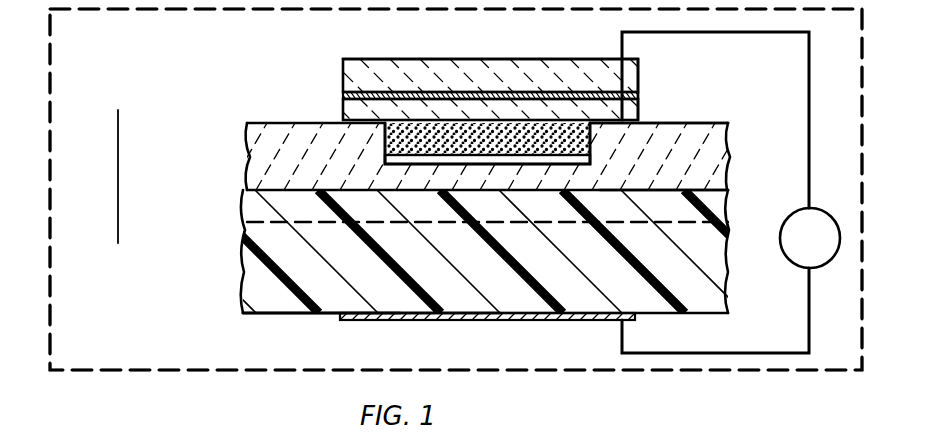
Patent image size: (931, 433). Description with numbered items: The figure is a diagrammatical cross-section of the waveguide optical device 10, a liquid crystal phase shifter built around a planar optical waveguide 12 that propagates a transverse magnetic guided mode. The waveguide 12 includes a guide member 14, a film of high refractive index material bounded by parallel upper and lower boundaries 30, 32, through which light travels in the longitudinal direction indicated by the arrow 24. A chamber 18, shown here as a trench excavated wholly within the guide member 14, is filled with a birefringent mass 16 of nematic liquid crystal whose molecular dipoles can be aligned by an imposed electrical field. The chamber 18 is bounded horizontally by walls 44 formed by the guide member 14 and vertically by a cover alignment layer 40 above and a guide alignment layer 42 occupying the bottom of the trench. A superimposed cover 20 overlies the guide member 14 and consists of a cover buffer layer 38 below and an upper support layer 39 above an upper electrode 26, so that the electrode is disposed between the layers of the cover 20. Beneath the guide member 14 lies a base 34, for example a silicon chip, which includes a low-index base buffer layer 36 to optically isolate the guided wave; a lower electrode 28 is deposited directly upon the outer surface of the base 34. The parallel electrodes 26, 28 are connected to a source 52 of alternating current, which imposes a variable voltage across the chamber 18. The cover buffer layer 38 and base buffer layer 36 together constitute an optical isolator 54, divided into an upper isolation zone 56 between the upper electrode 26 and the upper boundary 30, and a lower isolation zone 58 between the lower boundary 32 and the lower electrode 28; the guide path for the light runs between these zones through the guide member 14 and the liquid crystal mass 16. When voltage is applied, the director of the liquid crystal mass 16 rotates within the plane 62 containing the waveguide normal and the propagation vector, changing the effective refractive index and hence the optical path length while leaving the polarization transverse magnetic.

The waveguide optical device 10 is at (112, 387).
The optical waveguide 12 is at (830, 166).
The guide member 14 is at (470, 206).
The birefringent mass 16 is at (384, 76).
The chamber 18 is at (585, 142).
The cover 20 is at (422, 76).
The arrow 24 is at (292, 155).
The upper electrode 26 is at (387, 110).
The lower electrode 28 is at (402, 320).
The upper boundary 30 is at (703, 119).
The lower boundary 32 is at (712, 184).
The base 34 is at (292, 315).
The base buffer layer 36 is at (713, 203).
The cover buffer layer 38 is at (503, 93).
The upper support layer 39 is at (340, 62).
The cover alignment layer 40 is at (638, 95).
The guide alignment layer 42 is at (541, 166).
The walls 44 is at (397, 134).
The source 52 is at (826, 268).
The optical isolator 54 is at (118, 140).
The upper isolation zone 56 is at (118, 110).
The lower isolation zone 58 is at (222, 188).
The plane 62 is at (865, 122).